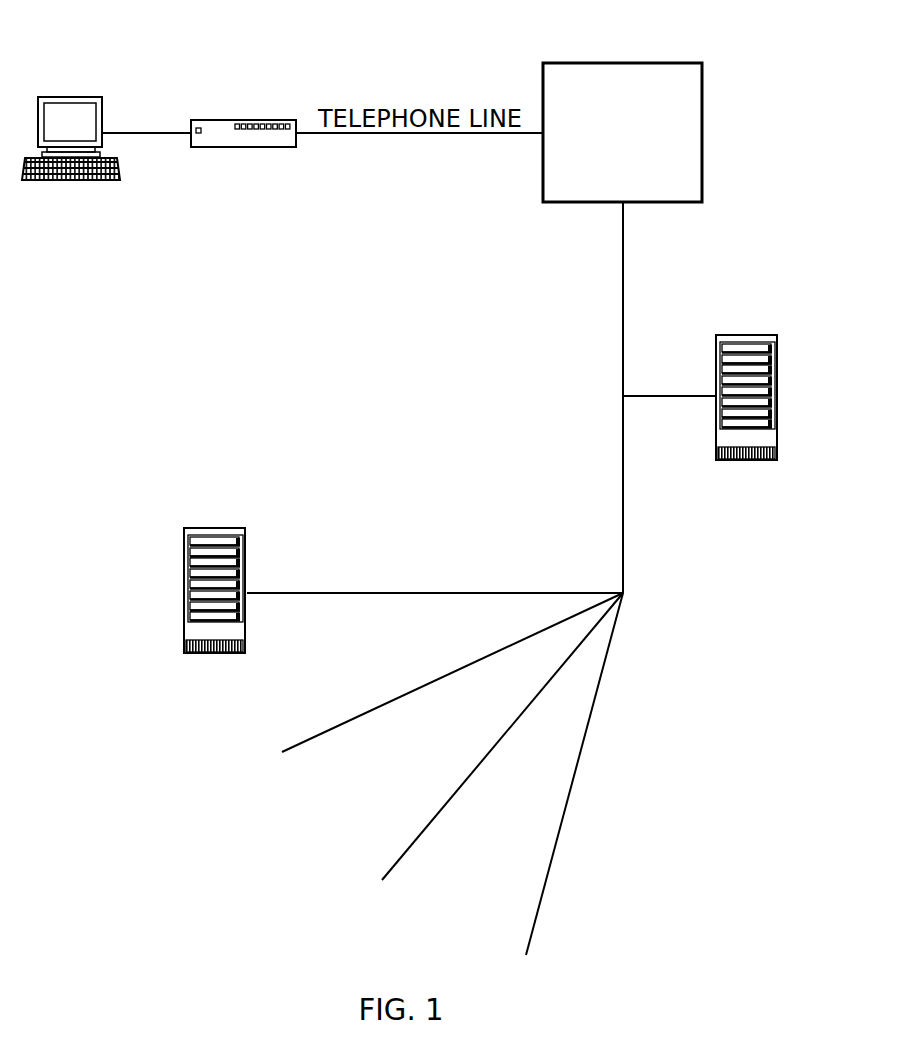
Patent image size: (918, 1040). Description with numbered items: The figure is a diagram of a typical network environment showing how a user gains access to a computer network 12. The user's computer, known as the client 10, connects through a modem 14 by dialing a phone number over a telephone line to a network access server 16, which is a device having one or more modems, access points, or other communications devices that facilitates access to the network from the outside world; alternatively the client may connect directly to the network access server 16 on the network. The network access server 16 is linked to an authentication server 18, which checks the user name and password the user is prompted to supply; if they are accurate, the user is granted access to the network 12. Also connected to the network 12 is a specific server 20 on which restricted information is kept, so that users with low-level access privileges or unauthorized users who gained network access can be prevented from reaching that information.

The client 10 is at (68, 97).
The computer network 12 is at (416, 786).
The modem 14 is at (248, 120).
The network access server 16 is at (622, 63).
The authentication server 18 is at (745, 335).
The server 20 is at (213, 527).